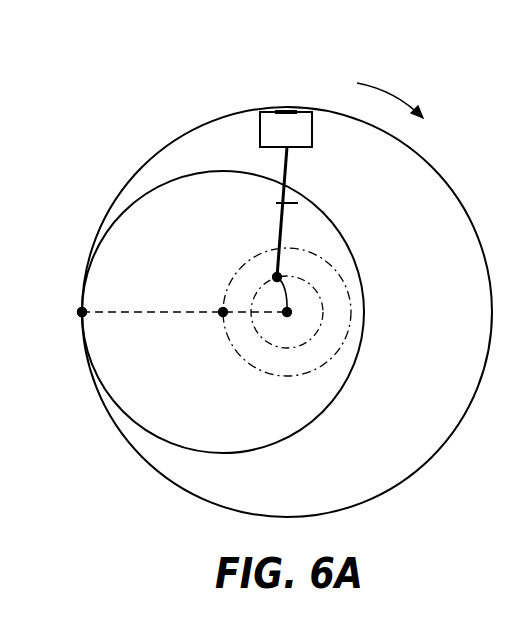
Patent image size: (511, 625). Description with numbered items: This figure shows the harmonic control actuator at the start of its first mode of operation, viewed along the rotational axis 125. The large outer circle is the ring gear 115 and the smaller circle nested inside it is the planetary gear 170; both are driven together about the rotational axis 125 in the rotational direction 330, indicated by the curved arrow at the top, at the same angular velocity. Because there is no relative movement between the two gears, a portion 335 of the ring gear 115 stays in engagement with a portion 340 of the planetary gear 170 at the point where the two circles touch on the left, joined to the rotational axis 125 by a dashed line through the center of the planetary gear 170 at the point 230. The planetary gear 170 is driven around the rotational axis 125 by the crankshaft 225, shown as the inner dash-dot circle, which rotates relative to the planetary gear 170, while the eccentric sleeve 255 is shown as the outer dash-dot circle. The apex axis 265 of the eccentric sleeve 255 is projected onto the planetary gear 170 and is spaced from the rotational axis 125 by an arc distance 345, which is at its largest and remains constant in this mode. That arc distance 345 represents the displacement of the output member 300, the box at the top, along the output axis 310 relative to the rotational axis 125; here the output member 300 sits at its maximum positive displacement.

The ring gear 115 is at (395, 487).
The planetary gear 170 is at (195, 170).
The output member 300 is at (260, 128).
The output axis 310 is at (290, 178).
The rotational direction 330 is at (396, 92).
The eccentric sleeve 255 is at (362, 262).
The crankshaft 225 is at (327, 327).
The apex axis 265 is at (277, 277).
The arc distance 345 is at (287, 294).
The rotor center 230 is at (223, 313).
The rotational axis 125 is at (287, 313).
The portion of the ring gear 335 is at (82, 313).
The portion of the planetary gear 340 is at (183, 312).